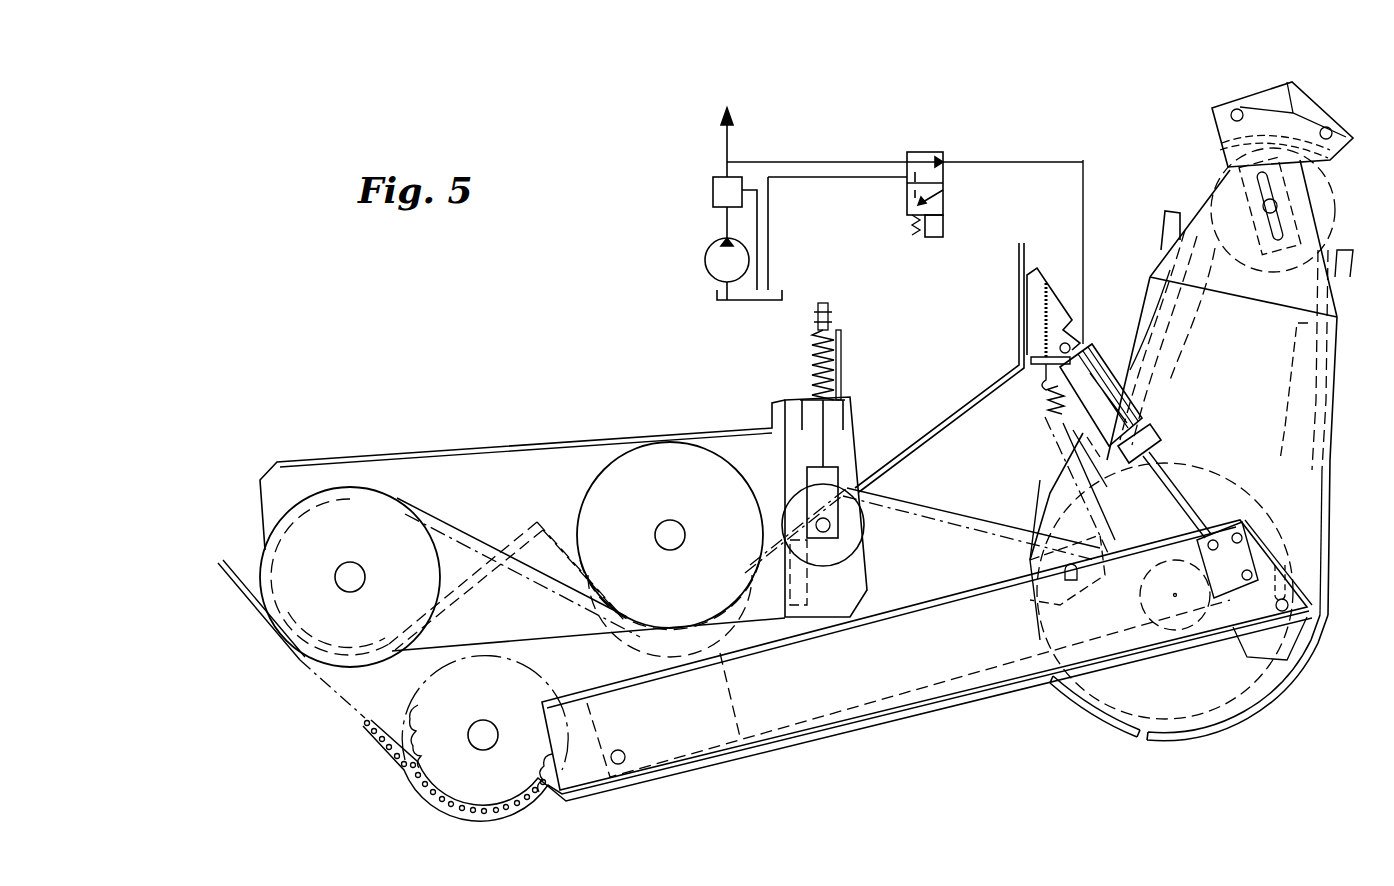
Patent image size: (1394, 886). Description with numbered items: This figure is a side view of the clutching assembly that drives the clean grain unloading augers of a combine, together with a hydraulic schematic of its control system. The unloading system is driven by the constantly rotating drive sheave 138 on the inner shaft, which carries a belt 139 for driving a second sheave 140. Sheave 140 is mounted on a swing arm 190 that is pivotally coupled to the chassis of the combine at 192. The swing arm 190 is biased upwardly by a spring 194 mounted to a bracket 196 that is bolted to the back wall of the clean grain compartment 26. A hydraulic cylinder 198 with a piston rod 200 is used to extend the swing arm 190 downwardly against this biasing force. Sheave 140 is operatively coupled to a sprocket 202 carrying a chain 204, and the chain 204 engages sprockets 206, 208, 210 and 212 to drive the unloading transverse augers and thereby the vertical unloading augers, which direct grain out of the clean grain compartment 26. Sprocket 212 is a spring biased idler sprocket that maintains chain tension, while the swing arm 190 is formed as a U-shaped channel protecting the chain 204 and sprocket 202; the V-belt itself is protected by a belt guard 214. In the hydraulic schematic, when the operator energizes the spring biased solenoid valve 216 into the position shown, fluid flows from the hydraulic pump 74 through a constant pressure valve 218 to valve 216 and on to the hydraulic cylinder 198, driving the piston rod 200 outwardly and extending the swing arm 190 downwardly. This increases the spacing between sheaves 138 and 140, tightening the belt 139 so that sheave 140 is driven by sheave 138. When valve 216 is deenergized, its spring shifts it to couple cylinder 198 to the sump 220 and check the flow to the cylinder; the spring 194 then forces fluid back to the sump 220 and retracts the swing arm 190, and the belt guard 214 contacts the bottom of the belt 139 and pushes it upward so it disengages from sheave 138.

The clean grain compartment 26 is at (950, 414).
The hydraulic pump 74 is at (705, 264).
The sheave 138 is at (1318, 192).
The belt 139 is at (1172, 242).
The second sheave 140 is at (1240, 695).
The swing arm 190 is at (862, 672).
The pivotal coupling 192 is at (620, 748).
The spring 194 is at (1045, 405).
The bracket 196 is at (1040, 268).
The hydraulic cylinder 198 is at (1085, 345).
The piston rod 200 is at (1160, 450).
The sprocket 202 is at (1160, 633).
The chain 204 is at (380, 742).
The sprocket 206 is at (504, 693).
The sprocket 208 is at (370, 546).
The sprocket 210 is at (694, 496).
The idler sprocket 212 is at (862, 530).
The belt guard 214 is at (1158, 742).
The solenoid valve 216 is at (940, 134).
The constant pressure valve 218 is at (713, 191).
The sump 220 is at (740, 302).